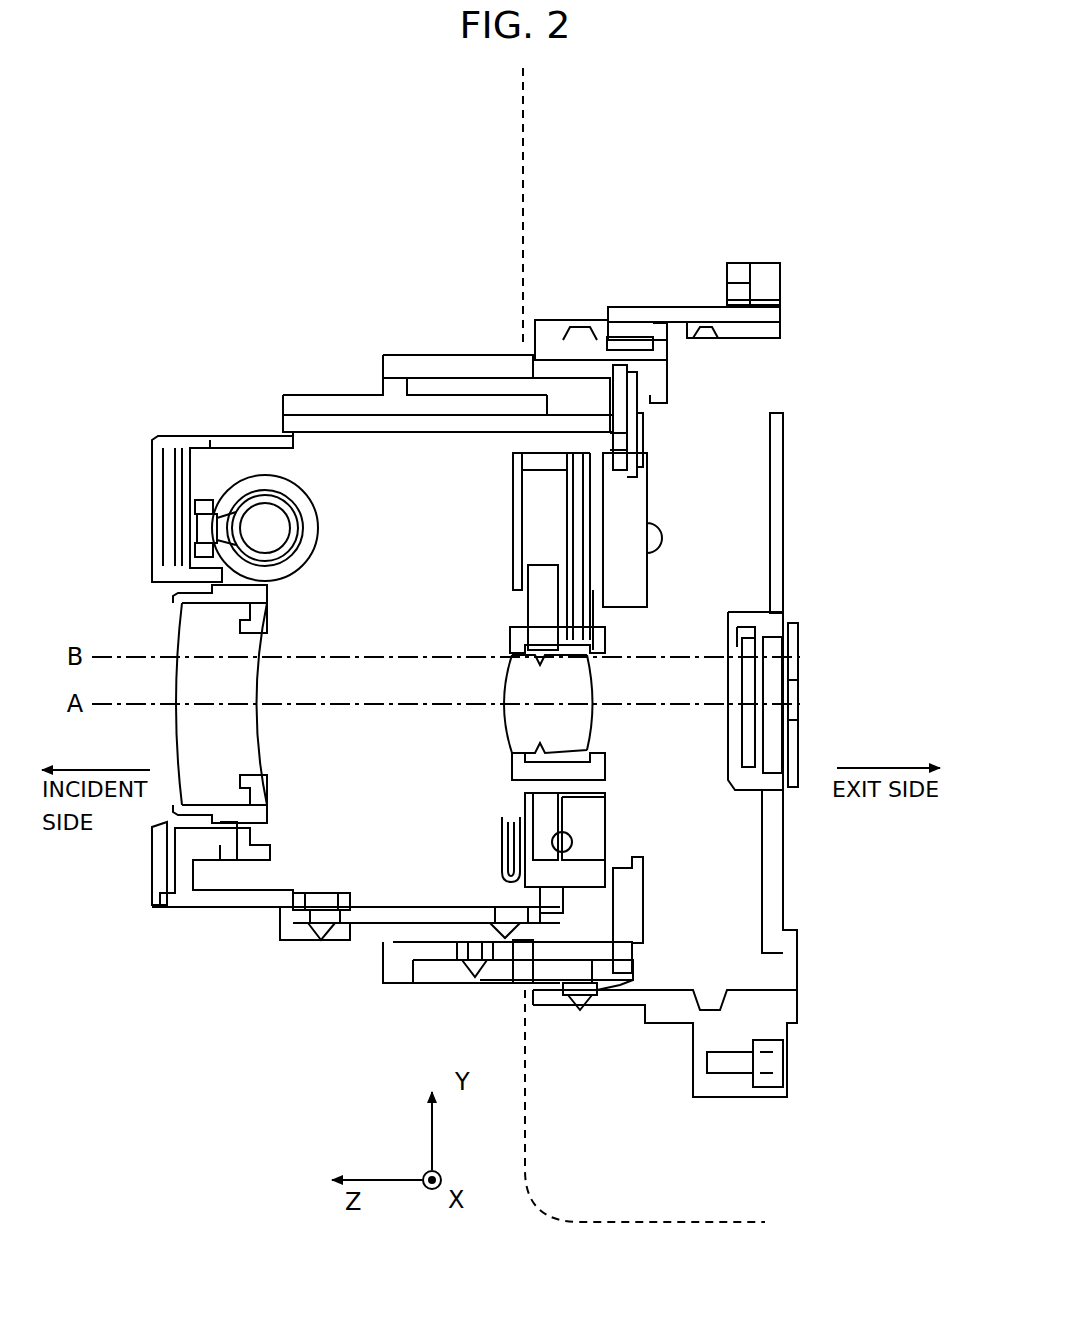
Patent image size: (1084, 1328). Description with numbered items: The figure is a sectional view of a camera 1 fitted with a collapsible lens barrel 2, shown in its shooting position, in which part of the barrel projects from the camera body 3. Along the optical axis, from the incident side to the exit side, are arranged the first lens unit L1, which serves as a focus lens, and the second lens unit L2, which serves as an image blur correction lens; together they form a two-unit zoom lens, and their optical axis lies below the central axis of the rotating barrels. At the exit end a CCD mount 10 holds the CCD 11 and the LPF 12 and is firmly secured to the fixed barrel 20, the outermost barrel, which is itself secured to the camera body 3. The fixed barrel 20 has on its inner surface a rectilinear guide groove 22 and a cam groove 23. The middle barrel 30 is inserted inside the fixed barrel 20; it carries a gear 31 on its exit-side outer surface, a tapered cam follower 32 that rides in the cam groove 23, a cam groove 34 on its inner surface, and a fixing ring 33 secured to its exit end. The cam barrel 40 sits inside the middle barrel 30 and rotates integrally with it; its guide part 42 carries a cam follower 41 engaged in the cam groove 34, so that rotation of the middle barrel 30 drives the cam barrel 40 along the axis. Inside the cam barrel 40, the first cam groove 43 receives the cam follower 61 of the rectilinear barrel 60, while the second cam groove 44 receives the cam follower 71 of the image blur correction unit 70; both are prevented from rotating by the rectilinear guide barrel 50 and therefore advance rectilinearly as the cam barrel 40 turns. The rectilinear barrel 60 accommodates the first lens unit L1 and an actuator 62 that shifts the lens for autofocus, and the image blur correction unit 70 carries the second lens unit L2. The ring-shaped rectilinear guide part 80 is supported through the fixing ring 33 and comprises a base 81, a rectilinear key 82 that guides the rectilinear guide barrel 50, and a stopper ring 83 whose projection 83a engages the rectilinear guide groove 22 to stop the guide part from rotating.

The camera 1 is at (297, 237).
The lens barrel 2 is at (252, 928).
The camera body 3 is at (522, 183).
The CCD mount 10 is at (778, 447).
The CCD 11 is at (778, 720).
The LPF 12 is at (745, 680).
The fixed barrel 20 is at (633, 307).
The rectilinear guide groove 22 is at (690, 330).
The cam groove 23 is at (590, 1005).
The middle barrel 30 is at (412, 365).
The gear 31 is at (600, 325).
The cam follower 32 is at (570, 1004).
The fixing ring 33 is at (640, 1000).
The cam groove 34 is at (460, 963).
The cam barrel 40 is at (300, 395).
The cam follower 41 is at (472, 972).
The guide part 42 is at (460, 948).
The cam groove 43 is at (330, 940).
The cam groove 44 is at (505, 928).
The rectilinear guide barrel 50 is at (355, 420).
The rectilinear barrel 60 is at (196, 436).
The cam follower 61 is at (318, 940).
The actuator 62 is at (258, 482).
The image blur correction unit 70 is at (625, 822).
The cam follower 71 is at (513, 970).
The rectilinear guide part 80 is at (658, 920).
The base 81 is at (622, 888).
The rectilinear key 82 is at (557, 430).
The stopper ring 83 is at (645, 412).
The projection 83a is at (657, 345).
The first lens unit L1 is at (187, 744).
The second lens unit L2 is at (512, 725).